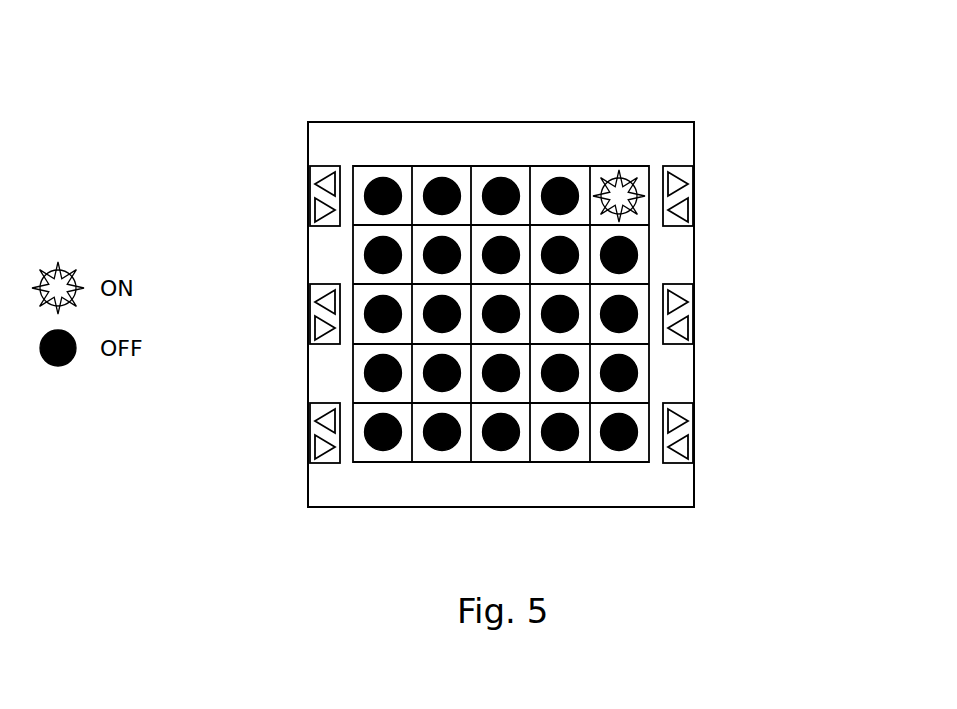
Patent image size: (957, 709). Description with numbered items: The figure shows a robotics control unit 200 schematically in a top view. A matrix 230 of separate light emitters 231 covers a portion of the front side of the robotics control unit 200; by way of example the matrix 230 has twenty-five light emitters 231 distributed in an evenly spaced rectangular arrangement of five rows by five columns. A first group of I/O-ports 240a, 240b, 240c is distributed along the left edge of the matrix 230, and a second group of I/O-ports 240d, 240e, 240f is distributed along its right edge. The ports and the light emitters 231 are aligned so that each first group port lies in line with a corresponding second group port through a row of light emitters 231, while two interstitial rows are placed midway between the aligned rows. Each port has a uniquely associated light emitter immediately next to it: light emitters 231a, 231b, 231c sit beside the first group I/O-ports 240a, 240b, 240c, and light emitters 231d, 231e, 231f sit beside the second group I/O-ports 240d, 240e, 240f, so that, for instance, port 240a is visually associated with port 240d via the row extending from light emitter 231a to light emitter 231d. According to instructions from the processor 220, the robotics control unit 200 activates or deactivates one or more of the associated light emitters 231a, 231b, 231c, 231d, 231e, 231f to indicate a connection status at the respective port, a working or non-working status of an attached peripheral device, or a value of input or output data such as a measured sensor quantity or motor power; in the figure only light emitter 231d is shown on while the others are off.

The robotics control unit 200 is at (589, 137).
The processor 220 is at (441, 474).
The matrix 230 is at (483, 275).
The light emitters 231 is at (502, 450).
The associated light emitter 231a is at (370, 185).
The associated light emitter 231b is at (370, 300).
The associated light emitter 231c is at (370, 448).
The associated light emitter 231d is at (630, 183).
The associated light emitter 231e is at (630, 305).
The associated light emitter 231f is at (633, 448).
The first group I/O-port 240a is at (325, 198).
The first group I/O-port 240b is at (325, 318).
The first group I/O-port 240c is at (322, 432).
The second group I/O-port 240d is at (685, 193).
The second group I/O-port 240e is at (685, 313).
The second group I/O-port 240f is at (680, 430).